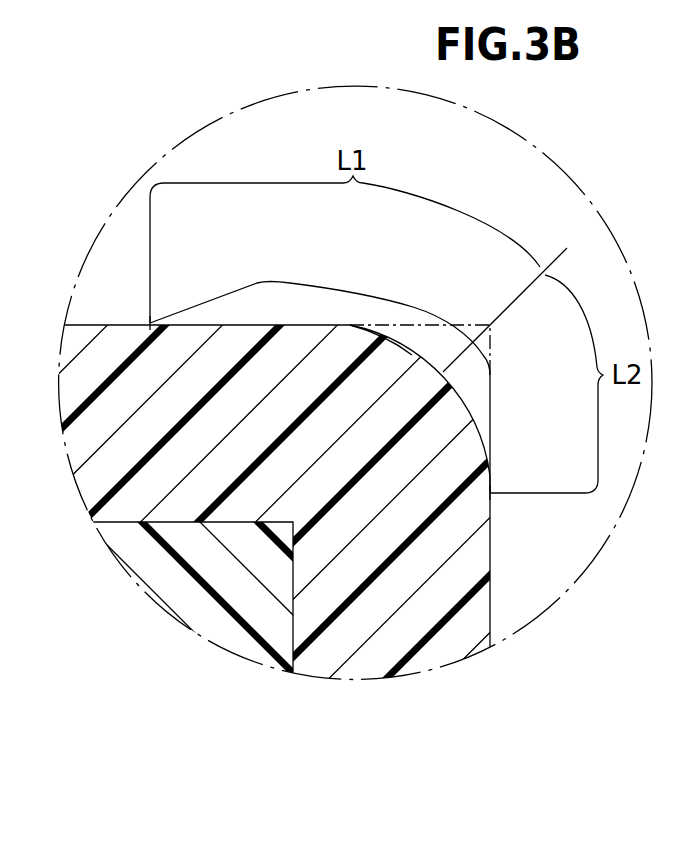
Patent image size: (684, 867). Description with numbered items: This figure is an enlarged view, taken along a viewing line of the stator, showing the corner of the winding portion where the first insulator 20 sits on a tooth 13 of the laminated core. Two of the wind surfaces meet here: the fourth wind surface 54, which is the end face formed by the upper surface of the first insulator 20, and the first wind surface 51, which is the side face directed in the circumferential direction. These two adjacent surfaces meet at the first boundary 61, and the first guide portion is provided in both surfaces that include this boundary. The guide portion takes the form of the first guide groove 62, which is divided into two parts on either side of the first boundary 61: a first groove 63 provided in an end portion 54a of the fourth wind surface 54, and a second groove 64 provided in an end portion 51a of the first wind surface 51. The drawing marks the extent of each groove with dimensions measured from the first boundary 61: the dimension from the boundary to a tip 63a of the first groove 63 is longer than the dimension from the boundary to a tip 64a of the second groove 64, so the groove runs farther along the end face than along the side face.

The tooth 13 is at (182, 590).
The first insulator 20 is at (365, 660).
The first wind surface 51 is at (490, 608).
The end portion of the first wind surface 51a is at (460, 398).
The fourth wind surface 54 is at (88, 323).
The end portion of the fourth wind surface 54a is at (412, 355).
The first boundary 61 is at (555, 259).
The first guide groove 62 is at (371, 350).
The first groove 63 is at (257, 277).
The tip of the first groove 63a is at (150, 323).
The second groove 64 is at (497, 414).
The tip of the second groove 64a is at (493, 487).